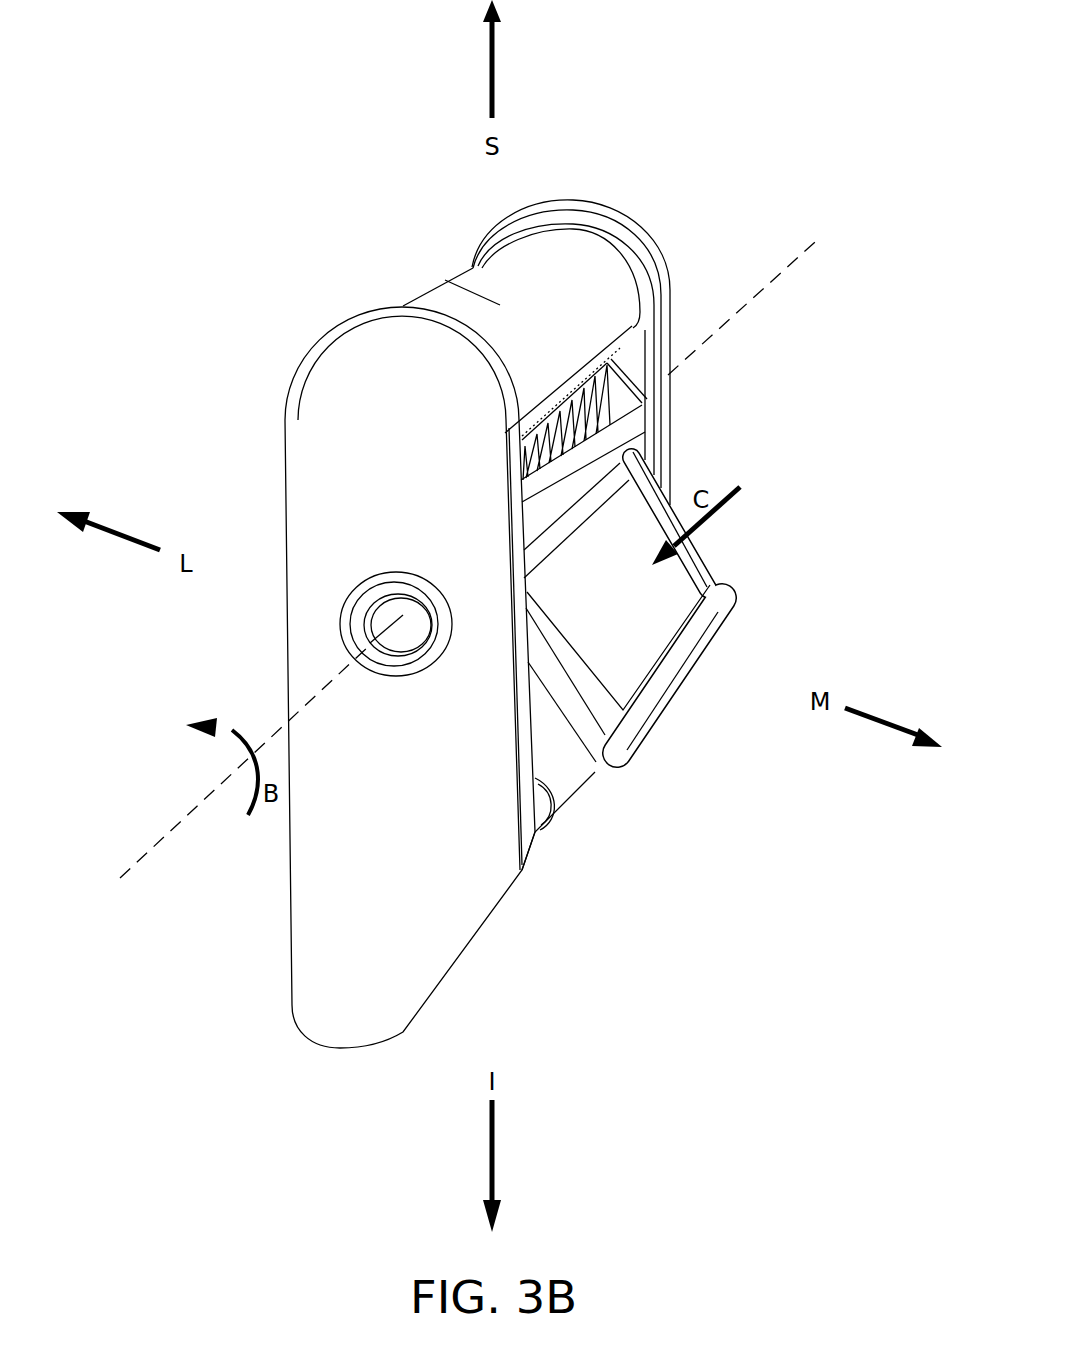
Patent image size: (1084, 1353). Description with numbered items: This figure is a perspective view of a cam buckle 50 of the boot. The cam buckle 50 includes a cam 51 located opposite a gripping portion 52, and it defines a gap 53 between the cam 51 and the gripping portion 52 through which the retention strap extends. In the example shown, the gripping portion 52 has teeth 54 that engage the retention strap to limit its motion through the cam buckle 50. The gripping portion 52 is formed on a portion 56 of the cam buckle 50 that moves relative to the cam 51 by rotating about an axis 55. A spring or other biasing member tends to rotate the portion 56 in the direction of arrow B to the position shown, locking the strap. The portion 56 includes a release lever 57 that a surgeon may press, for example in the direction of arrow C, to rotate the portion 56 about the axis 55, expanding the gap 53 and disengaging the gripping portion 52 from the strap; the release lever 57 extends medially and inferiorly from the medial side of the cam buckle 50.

The cam buckle 50 is at (466, 624).
The cam 51 is at (453, 278).
The gripping portion 52 is at (600, 440).
The gap 53 is at (672, 292).
The teeth 54 is at (590, 437).
The axis 55 is at (168, 837).
The portion 56 is at (623, 497).
The release lever 57 is at (675, 573).